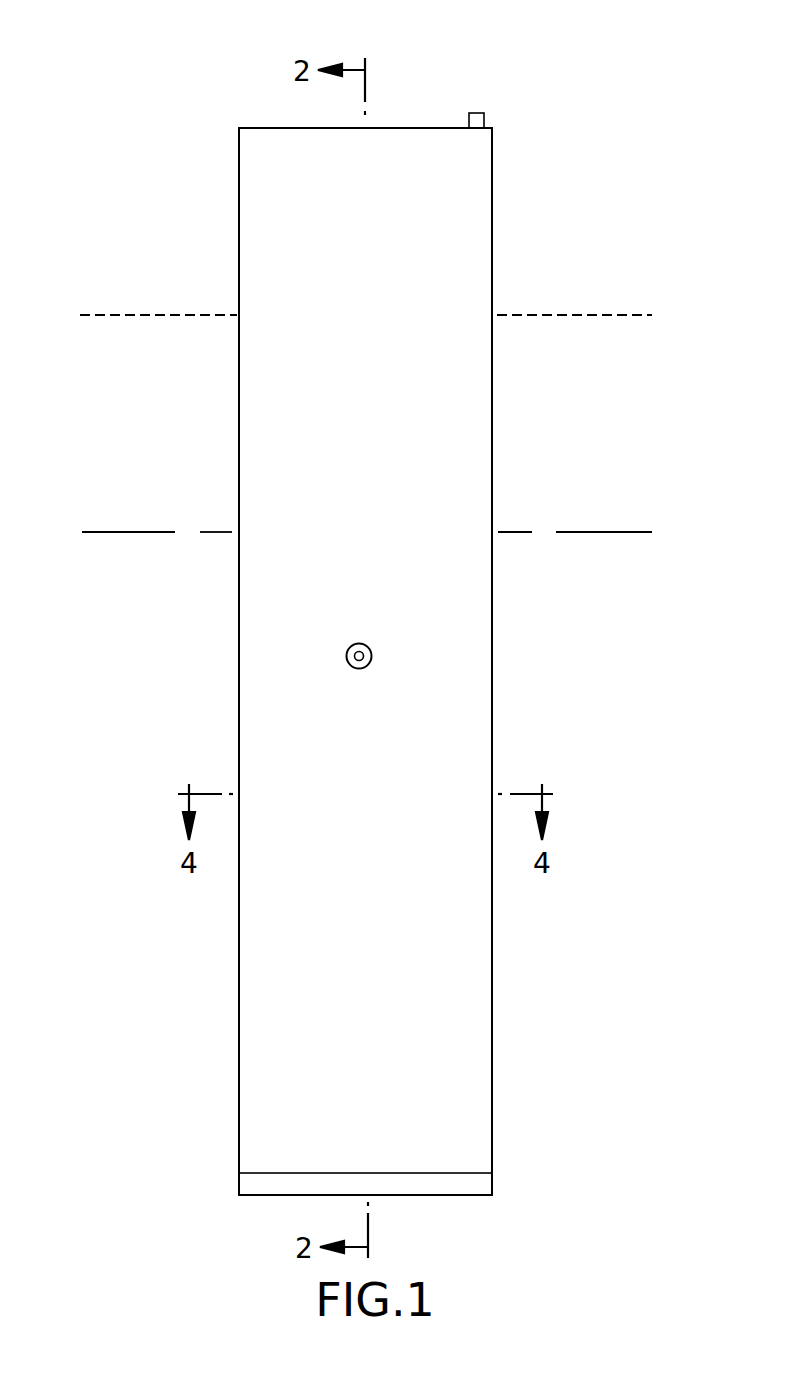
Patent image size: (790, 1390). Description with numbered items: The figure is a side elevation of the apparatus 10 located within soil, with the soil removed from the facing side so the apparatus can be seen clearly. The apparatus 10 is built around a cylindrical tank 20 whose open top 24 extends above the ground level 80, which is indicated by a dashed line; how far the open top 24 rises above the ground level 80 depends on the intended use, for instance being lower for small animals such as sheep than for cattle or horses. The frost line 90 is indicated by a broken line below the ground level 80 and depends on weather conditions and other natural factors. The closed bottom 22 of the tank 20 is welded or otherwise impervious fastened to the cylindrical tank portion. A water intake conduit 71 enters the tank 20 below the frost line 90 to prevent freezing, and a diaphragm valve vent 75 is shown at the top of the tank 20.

The apparatus 10 is at (522, 162).
The tank 20 is at (482, 288).
The closed bottom of tank 22 is at (483, 1185).
The open top of tank 24 is at (404, 128).
The water intake conduit 71 is at (372, 652).
The diaphragm valve vent 75 is at (477, 113).
The ground level 80 is at (137, 315).
The frost line 90 is at (112, 532).